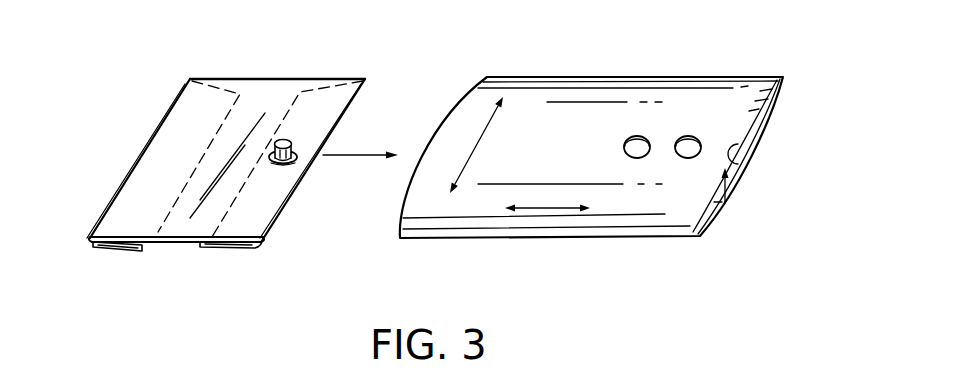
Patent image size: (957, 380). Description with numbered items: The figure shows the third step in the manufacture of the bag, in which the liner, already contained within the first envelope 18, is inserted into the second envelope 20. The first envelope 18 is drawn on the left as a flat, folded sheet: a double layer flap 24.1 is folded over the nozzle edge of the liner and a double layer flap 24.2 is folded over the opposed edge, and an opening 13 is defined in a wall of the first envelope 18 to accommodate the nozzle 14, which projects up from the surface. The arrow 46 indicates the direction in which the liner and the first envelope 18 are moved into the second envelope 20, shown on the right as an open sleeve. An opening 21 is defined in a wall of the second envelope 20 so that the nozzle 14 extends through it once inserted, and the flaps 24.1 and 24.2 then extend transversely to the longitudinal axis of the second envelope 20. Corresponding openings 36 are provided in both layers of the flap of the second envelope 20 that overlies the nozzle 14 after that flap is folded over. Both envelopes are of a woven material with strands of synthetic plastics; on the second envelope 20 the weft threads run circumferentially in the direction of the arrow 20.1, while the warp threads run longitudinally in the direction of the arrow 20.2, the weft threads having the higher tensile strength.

The first envelope 18 is at (240, 79).
The nozzle 14 is at (291, 142).
The opening 13 is at (280, 179).
The arrow 46 is at (357, 157).
The double layer flap 24.1 is at (227, 246).
The double layer flap 24.2 is at (103, 243).
The second envelope 20 is at (596, 77).
The opening 21 is at (654, 121).
The openings 36 is at (679, 172).
The arrow 20.1 is at (478, 152).
The arrow 20.2 is at (553, 208).